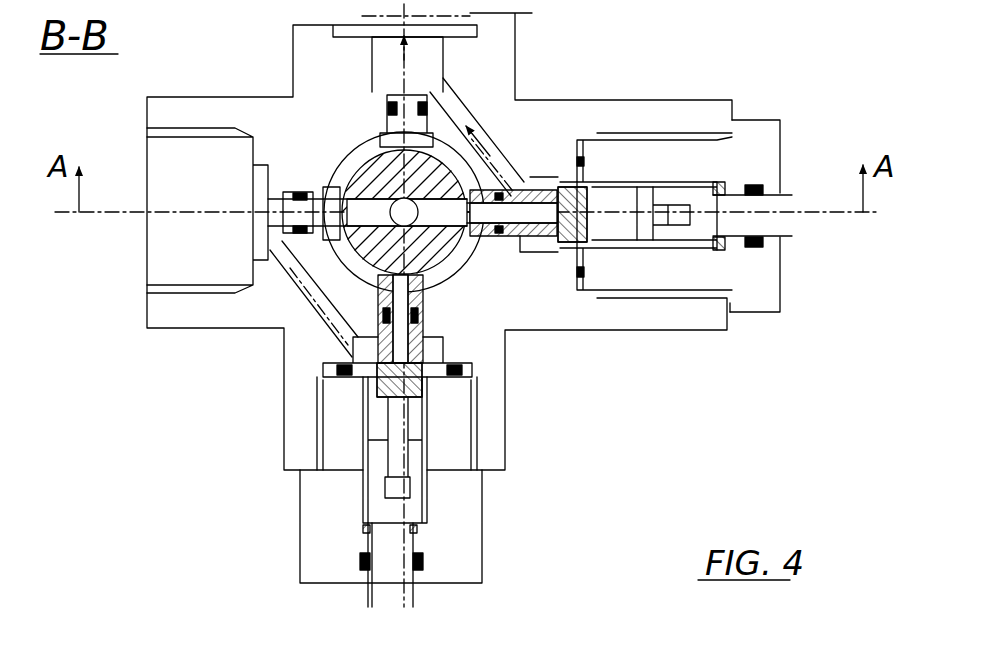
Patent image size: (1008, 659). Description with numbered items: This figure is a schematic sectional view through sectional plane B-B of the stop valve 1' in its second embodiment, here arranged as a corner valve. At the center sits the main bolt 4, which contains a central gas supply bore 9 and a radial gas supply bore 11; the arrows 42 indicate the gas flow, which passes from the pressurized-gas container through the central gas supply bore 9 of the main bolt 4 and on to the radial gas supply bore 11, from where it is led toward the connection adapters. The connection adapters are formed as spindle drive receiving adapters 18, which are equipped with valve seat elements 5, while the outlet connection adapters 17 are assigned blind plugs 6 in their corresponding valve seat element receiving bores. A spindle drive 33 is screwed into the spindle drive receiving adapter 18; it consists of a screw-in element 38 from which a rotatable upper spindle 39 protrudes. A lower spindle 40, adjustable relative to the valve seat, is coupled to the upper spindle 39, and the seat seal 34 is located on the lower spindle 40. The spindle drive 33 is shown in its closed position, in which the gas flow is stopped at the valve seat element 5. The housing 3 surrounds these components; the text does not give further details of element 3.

The stop valve 1' is at (189, 27).
The housing 3 is at (250, 308).
The main bolt 4 is at (407, 219).
The valve seat element 5 is at (537, 227).
The blind plug 6 is at (393, 130).
The central gas supply bore 9 is at (427, 263).
The radial gas supply bore 11 is at (430, 257).
The outlet connection adapter 17 is at (178, 245).
The spindle drive receiving adapter 18 is at (499, 484).
The spindle drive 33 is at (295, 513).
The seat seal 34 is at (577, 250).
The screw-in element 38 is at (758, 138).
The upper spindle 39 is at (702, 197).
The lower spindle 40 is at (617, 230).
The arrows 42 is at (485, 172).